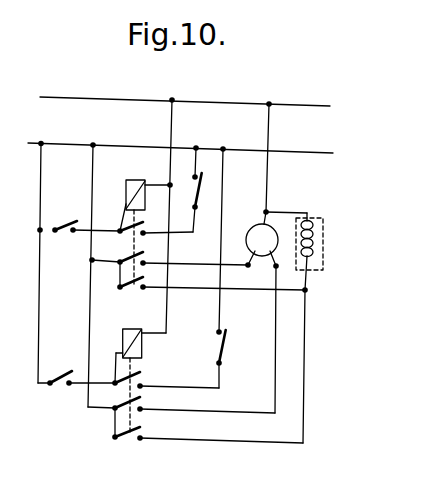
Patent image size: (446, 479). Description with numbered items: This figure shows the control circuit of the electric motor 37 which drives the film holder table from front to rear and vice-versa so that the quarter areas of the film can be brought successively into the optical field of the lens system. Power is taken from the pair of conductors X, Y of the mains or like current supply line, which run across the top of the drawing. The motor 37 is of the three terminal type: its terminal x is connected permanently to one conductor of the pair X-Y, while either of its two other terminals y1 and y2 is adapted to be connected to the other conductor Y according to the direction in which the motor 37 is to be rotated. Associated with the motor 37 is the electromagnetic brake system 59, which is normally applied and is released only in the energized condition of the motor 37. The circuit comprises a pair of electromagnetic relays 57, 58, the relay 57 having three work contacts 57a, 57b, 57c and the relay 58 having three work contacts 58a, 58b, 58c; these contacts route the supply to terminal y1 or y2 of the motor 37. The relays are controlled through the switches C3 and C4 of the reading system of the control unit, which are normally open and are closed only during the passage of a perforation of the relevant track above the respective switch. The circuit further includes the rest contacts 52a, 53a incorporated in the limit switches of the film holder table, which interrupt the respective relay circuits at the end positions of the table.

The supply line conductor X is at (193, 108).
The supply line conductor Y is at (187, 151).
The reading system switch C3 is at (66, 222).
The reading system switch C4 is at (63, 376).
The electromagnetic relay 57 is at (138, 180).
The work contact of relay 57 57a is at (120, 231).
The work contact of relay 57 57b is at (120, 262).
The work contact of relay 57 57c is at (120, 287).
The electromagnetic relay 58 is at (138, 323).
The work contact of relay 58 58a is at (141, 372).
The work contact of relay 58 58b is at (142, 396).
The work contact of relay 58 58c is at (142, 426).
The rest contact 52a is at (201, 190).
The rest contact 53a is at (225, 346).
The electric motor 37 is at (255, 227).
The electromagnetic brake system 59 is at (320, 218).
The motor terminal x is at (268, 209).
The motor terminal y1 is at (248, 265).
The motor terminal y2 is at (276, 266).